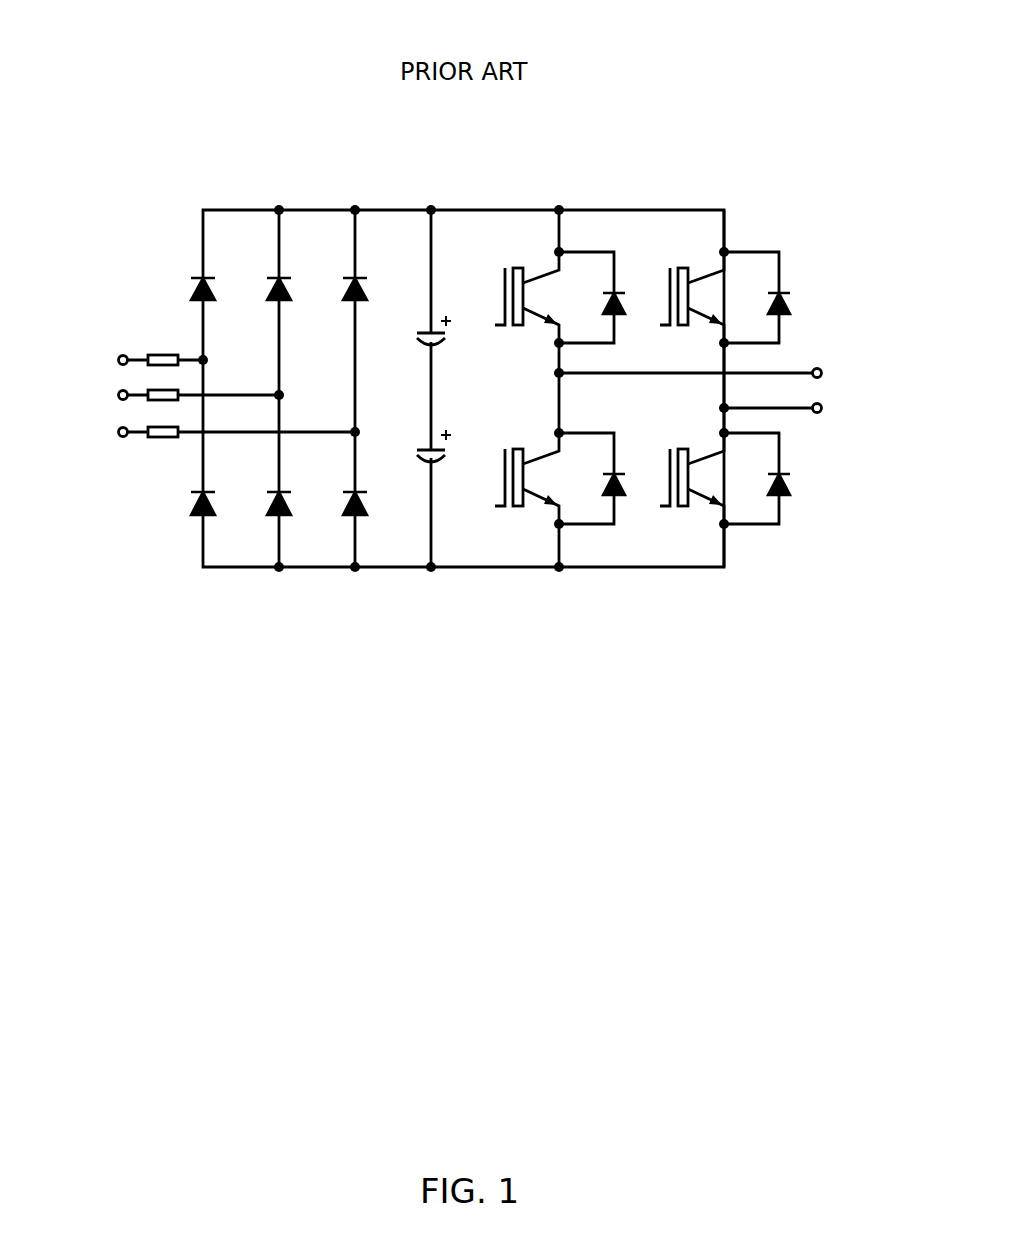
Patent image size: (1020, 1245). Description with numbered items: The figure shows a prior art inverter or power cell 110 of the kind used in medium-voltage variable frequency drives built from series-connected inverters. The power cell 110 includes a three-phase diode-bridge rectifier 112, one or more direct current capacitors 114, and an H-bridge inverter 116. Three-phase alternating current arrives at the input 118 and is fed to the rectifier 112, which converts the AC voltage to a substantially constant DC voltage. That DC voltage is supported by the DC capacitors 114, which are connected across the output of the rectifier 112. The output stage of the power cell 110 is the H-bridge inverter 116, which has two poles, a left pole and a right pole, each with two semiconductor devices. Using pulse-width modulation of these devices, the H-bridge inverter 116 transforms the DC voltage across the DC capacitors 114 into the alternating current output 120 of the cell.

The power cell 110 is at (198, 122).
The three-phase diode-bridge rectifier 112 is at (370, 635).
The direct current capacitors 114 is at (382, 635).
The H-bridge inverter 116 is at (798, 635).
The input 118 is at (117, 332).
The AC output 120 is at (847, 343).